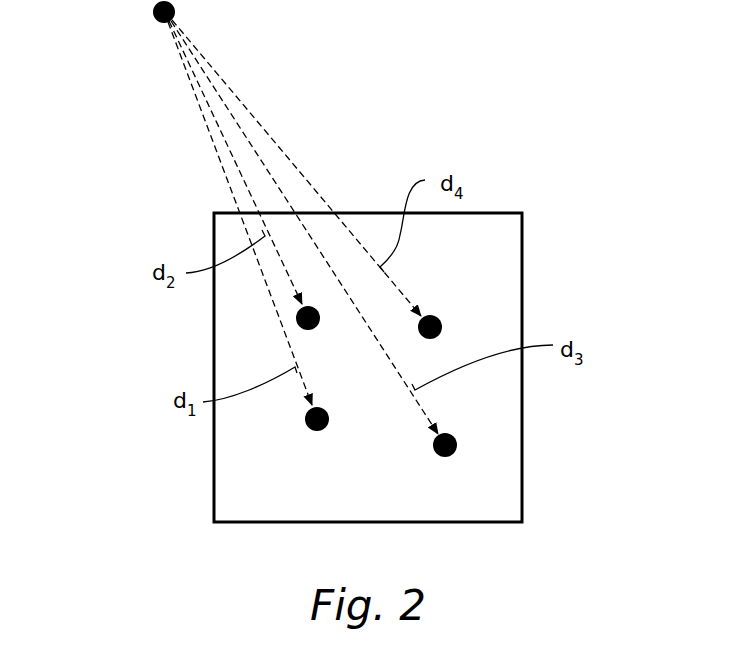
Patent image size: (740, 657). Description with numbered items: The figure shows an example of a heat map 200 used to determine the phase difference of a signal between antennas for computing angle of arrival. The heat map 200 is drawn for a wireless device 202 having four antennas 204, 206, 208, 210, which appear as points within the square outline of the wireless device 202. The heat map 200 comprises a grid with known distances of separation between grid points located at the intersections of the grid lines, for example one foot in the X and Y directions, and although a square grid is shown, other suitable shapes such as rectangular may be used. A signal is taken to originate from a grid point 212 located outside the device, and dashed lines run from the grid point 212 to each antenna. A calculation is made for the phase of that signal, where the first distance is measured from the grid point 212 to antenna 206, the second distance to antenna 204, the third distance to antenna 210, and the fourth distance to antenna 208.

The heat map 200 is at (491, 72).
The wireless device 202 is at (522, 237).
The antenna 204 is at (298, 328).
The antenna 206 is at (313, 430).
The antenna 208 is at (436, 317).
The antenna 210 is at (455, 435).
The grid point 212 is at (157, 22).